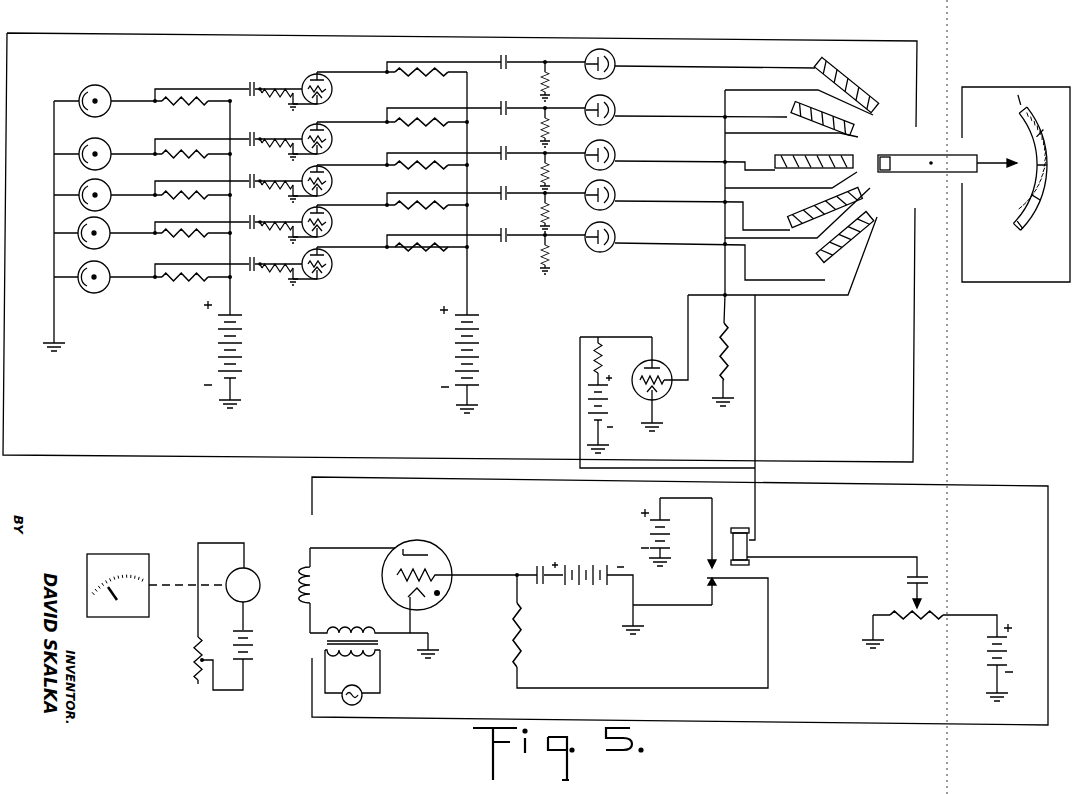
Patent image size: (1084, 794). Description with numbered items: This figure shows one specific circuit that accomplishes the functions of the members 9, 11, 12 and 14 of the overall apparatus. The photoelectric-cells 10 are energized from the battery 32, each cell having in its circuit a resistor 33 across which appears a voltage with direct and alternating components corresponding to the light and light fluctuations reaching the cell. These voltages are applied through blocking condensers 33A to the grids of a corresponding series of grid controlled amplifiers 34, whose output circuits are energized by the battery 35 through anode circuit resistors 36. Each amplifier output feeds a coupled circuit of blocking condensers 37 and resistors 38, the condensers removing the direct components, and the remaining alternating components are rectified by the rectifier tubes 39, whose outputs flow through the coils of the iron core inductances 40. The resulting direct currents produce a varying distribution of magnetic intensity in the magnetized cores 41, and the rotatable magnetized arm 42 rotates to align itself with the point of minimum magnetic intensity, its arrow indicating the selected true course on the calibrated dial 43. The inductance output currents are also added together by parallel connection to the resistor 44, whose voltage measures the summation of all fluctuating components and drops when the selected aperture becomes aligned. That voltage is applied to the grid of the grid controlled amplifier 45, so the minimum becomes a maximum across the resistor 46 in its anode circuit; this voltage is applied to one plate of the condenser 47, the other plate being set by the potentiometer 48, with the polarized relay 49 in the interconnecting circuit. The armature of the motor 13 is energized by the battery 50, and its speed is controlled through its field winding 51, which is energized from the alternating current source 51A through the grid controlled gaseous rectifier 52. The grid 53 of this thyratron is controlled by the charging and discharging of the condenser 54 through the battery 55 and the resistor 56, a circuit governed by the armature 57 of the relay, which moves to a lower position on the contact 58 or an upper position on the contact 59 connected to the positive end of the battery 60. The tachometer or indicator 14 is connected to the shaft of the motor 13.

The member 9 is at (165, 455).
The photoelectric-cells 10 is at (93, 85).
The member 11 is at (1013, 282).
The member 12 is at (1048, 561).
The motor 13 is at (255, 570).
The tachometer or indicator 14 is at (135, 554).
The battery 32 is at (243, 337).
The resistor 33 is at (203, 106).
The blocking condensers 33A is at (264, 88).
The grid controlled amplifiers 34 is at (327, 100).
The battery 35 is at (455, 343).
The anode circuit resistors 36 is at (421, 78).
The blocking condensers 37 is at (512, 70).
The resistors 38 is at (549, 82).
The rectifier tubes 39 is at (610, 75).
The iron core inductances 40 is at (862, 86).
The magnetized cores 41 is at (875, 116).
The rotatable magnetized arm 42 is at (931, 153).
The calibrated dial 43 is at (1028, 208).
The resistor 44 is at (731, 352).
The grid controlled amplifier 45 is at (667, 395).
The resistor 46 is at (606, 355).
The condenser 47 is at (928, 588).
The potentiometer 48 is at (911, 650).
The polarized relay 49 is at (751, 550).
The battery 50 is at (253, 660).
The field winding 51 is at (319, 590).
The alternating current source 51A is at (368, 680).
The grid controlled gaseous rectifier 52 is at (449, 588).
The grid 53 is at (424, 570).
The condenser 54 is at (507, 563).
The battery 55 is at (592, 596).
The resistor 56 is at (524, 636).
The armature 57 is at (756, 584).
The contact 58 is at (706, 588).
The contact 59 is at (700, 533).
The battery 60 is at (670, 518).